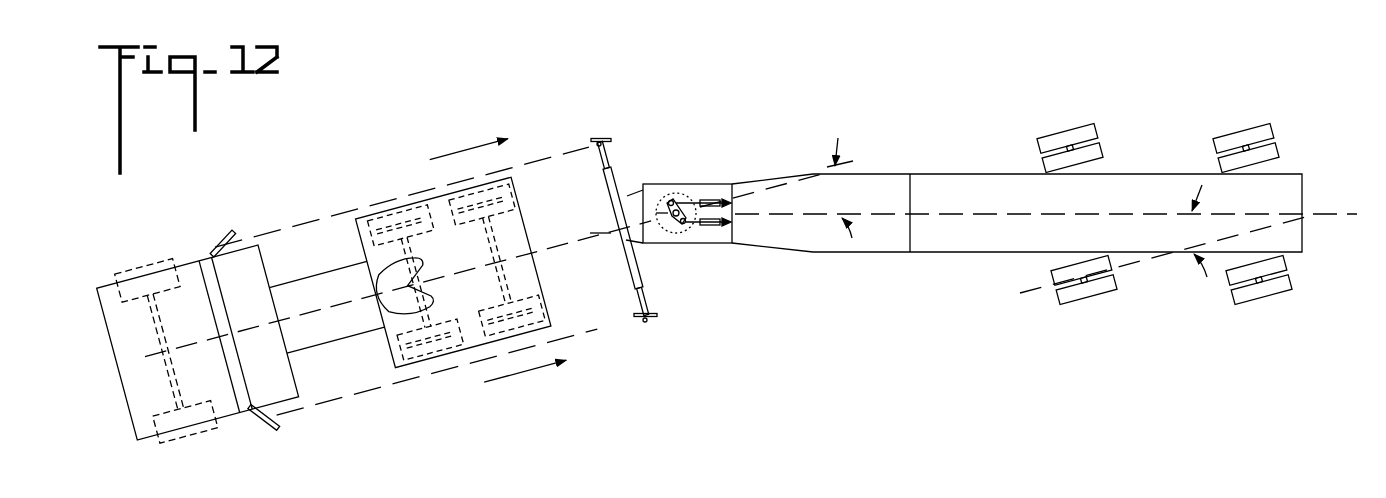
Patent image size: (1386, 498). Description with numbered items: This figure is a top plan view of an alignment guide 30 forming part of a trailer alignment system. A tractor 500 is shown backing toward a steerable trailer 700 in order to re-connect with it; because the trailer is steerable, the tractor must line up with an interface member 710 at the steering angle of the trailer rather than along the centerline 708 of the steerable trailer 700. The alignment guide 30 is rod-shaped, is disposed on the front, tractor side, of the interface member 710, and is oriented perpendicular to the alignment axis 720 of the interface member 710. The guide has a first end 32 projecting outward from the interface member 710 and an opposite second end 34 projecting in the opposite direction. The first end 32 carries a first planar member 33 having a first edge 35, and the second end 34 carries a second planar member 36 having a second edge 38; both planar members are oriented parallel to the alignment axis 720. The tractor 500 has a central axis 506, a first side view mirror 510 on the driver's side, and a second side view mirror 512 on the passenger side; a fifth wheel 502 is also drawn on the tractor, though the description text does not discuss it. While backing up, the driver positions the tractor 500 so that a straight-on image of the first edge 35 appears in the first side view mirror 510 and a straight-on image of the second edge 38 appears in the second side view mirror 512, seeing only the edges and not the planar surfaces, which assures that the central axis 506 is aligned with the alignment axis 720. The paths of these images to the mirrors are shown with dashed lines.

The tractor 500 is at (330, 180).
The fifth wheel 502 is at (383, 283).
The central axis 506 is at (534, 252).
The first side view mirror 510 is at (294, 413).
The second side view mirror 512 is at (228, 241).
The alignment guide 30 is at (628, 174).
The first end 32 is at (641, 314).
The first planar member 33 is at (646, 321).
The second end 34 is at (598, 146).
The first edge 35 is at (641, 319).
The second planar member 36 is at (598, 138).
The second edge 38 is at (597, 144).
The steerable trailer 700 is at (906, 116).
The centerline 708 is at (983, 213).
The interface member 710 is at (712, 183).
The alignment axis 720 is at (606, 235).